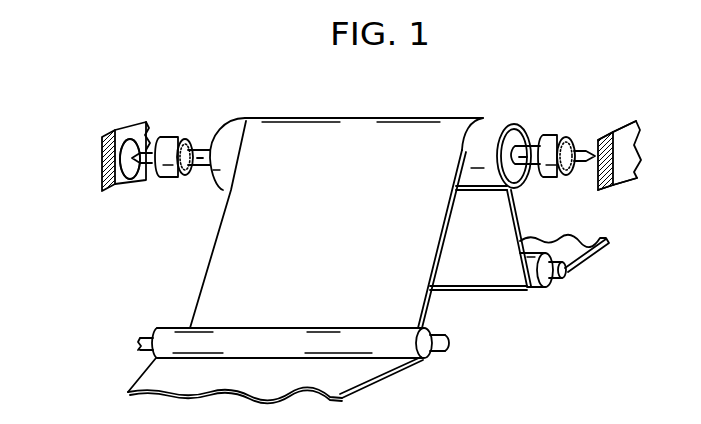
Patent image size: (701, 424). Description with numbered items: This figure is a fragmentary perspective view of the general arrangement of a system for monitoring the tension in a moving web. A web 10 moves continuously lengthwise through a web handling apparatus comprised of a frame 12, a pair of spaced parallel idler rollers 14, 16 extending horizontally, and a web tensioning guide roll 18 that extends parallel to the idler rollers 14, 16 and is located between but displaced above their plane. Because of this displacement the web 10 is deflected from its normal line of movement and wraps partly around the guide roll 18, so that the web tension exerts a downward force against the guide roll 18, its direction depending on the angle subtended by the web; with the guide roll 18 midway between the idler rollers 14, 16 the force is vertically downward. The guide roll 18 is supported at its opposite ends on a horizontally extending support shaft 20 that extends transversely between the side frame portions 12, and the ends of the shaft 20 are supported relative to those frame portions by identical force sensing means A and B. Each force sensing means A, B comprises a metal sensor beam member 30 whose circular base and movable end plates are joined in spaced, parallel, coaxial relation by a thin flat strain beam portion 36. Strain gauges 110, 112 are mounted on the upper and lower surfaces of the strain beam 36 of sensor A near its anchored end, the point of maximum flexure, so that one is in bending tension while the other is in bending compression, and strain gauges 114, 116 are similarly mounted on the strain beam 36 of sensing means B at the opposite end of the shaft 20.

The web 10 is at (218, 250).
The frame 12 is at (125, 130).
The idler roller 14 is at (412, 347).
The idler roller 16 is at (533, 272).
The web tensioning guide roll 18 is at (496, 128).
The support shaft 20 is at (200, 152).
The sensor beam member 30 is at (172, 122).
The strain beam portion 36 is at (143, 150).
The strain gauge 110 is at (143, 148).
The strain gauge 112 is at (147, 172).
The strain gauge 114 is at (599, 142).
The strain gauge 116 is at (592, 164).
The force sensing means A is at (158, 192).
The force sensing means B is at (566, 195).